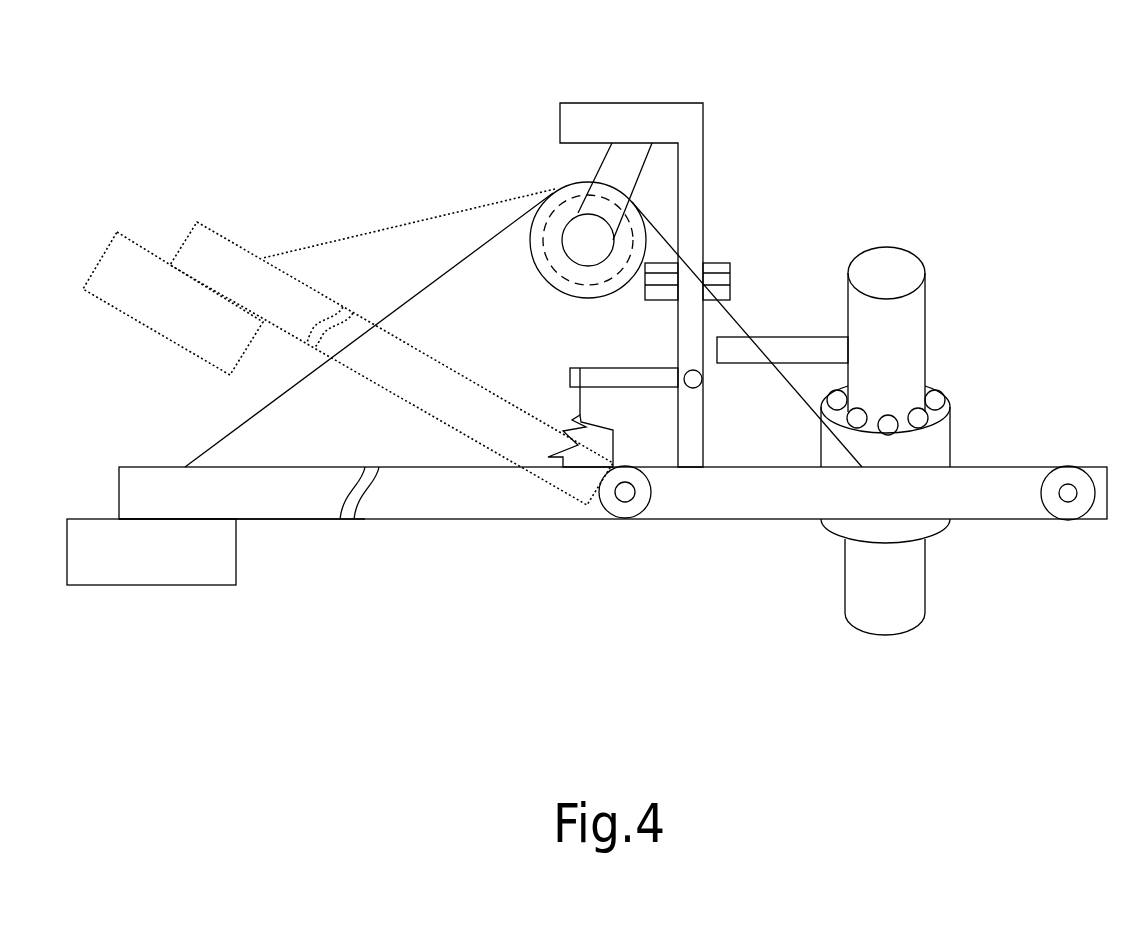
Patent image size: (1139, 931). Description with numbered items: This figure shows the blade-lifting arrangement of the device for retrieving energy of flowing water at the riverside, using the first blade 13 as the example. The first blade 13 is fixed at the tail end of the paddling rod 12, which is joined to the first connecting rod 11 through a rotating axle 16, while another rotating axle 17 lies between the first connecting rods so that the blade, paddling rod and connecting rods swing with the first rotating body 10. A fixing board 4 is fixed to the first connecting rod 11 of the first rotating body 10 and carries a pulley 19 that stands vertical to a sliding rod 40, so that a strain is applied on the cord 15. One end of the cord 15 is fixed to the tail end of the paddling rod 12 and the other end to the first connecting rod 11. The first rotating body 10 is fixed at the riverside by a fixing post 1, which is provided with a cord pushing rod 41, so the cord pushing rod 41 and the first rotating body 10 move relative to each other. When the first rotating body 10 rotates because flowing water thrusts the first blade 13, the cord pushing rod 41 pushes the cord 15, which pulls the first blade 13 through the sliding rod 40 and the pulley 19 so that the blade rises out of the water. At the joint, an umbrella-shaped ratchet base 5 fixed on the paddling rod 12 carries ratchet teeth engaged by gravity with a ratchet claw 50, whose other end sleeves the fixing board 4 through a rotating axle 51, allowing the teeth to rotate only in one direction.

The fixing post 1 is at (885, 638).
The fixing board 4 is at (625, 103).
The ratchet base 5 is at (573, 443).
The first rotating body 10 is at (950, 428).
The first connecting rod 11 is at (793, 520).
The paddling rod 12 is at (273, 520).
The first blade 13 is at (183, 585).
The cord 15 is at (430, 262).
The rotating axle 16 is at (627, 520).
The rotating axle 17 is at (1067, 520).
The pulley 19 is at (528, 240).
The sliding rod 40 is at (722, 263).
The cord pushing rod 41 is at (783, 337).
The ratchet claw 50 is at (573, 388).
The rotating axle 51 is at (702, 379).